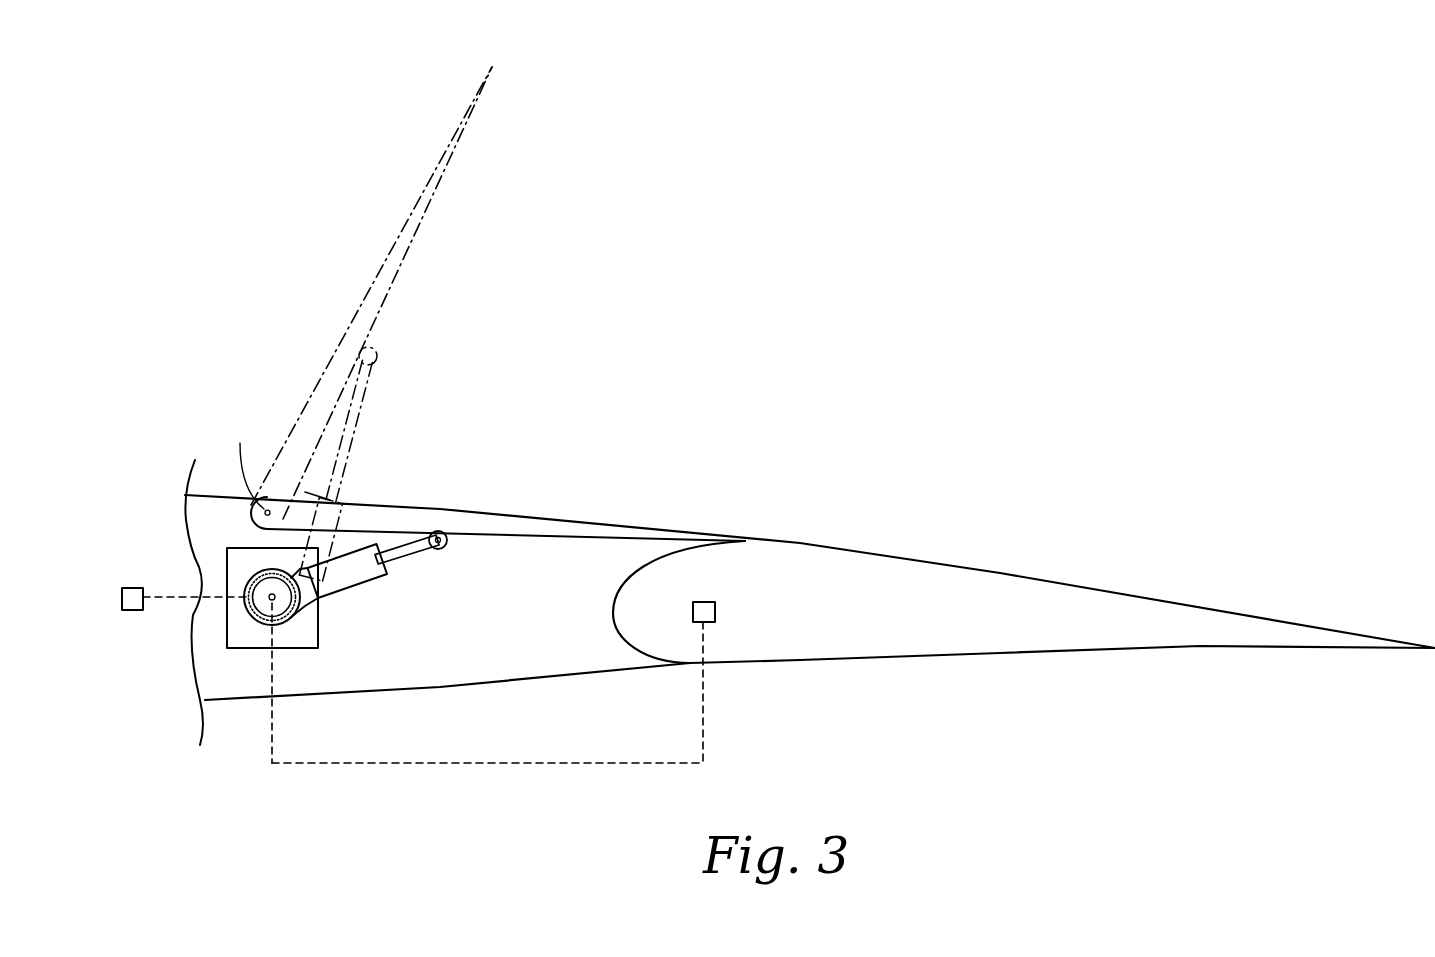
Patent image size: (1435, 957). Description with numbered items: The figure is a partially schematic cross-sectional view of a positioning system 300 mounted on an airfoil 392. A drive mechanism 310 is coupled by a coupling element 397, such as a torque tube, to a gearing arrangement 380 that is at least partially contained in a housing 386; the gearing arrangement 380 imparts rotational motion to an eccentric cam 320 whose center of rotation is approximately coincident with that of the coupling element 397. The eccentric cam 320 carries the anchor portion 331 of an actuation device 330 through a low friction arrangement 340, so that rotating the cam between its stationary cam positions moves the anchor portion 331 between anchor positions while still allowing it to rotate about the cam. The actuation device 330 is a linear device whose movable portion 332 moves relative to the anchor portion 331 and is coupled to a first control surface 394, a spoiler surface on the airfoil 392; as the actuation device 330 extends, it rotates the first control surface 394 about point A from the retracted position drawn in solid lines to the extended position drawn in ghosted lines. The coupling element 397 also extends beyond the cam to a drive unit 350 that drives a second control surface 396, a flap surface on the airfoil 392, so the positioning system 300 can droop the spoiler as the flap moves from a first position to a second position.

The positioning system 300 is at (486, 424).
The drive mechanism 310 is at (133, 612).
The eccentric cam 320 is at (285, 607).
The actuation device 330 is at (392, 529).
The anchor portion 331 is at (349, 600).
The movable portion 332 is at (362, 398).
The low friction arrangement 340 is at (353, 505).
The drive unit 350 is at (703, 602).
The gearing arrangement 380 is at (243, 640).
The housing 386 is at (232, 550).
The airfoil 392 is at (219, 512).
The first control surface 394 is at (392, 243).
The second control surface 396 is at (1022, 573).
The coupling element 397 is at (248, 588).